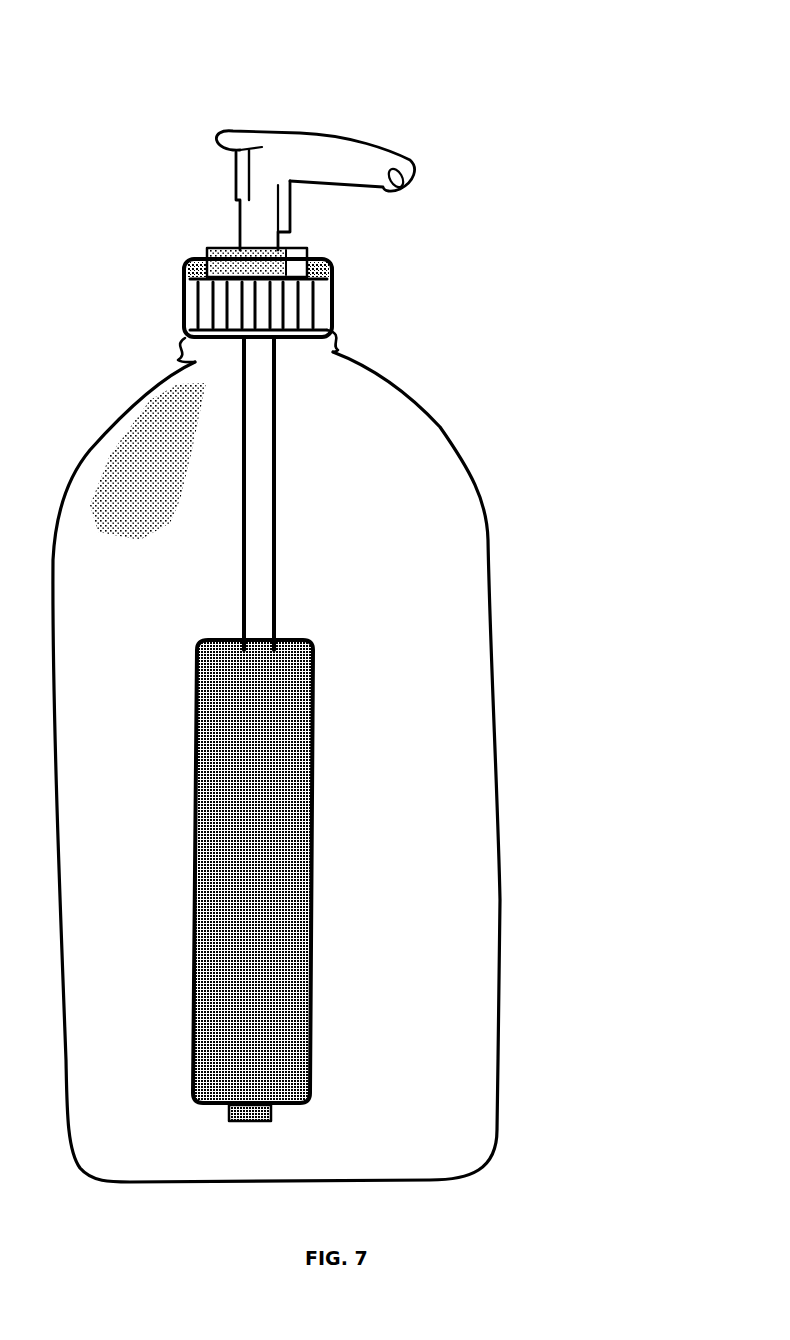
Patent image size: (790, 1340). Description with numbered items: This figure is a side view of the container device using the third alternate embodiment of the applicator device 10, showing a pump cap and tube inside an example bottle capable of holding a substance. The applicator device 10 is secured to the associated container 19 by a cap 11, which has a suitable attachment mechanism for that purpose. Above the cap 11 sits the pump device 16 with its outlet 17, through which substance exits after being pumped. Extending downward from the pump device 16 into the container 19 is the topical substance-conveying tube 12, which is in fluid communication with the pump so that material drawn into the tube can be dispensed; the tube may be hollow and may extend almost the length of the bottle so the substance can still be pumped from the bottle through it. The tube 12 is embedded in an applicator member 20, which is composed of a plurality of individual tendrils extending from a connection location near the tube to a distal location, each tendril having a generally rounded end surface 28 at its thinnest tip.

The applicator device 10 is at (388, 133).
The cap 11 is at (333, 292).
The topical substance-conveying tube 12 is at (276, 534).
The pump device 16 is at (292, 231).
The outlet 17 is at (410, 178).
The container 19 is at (437, 427).
The applicator member 20 is at (312, 993).
The rounded end surface 28 is at (237, 800).